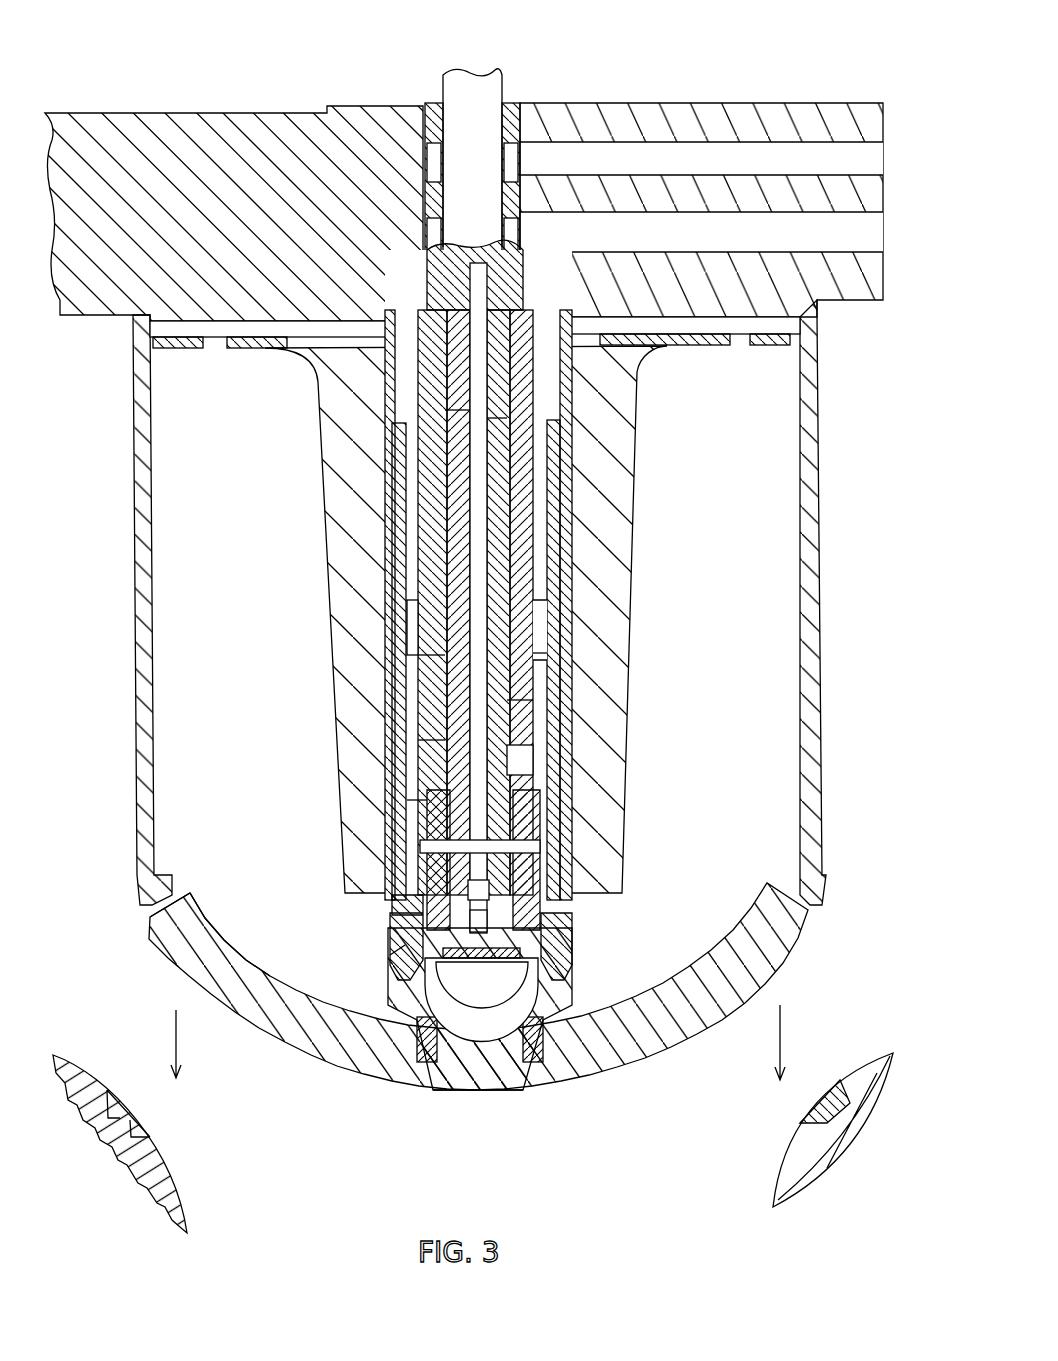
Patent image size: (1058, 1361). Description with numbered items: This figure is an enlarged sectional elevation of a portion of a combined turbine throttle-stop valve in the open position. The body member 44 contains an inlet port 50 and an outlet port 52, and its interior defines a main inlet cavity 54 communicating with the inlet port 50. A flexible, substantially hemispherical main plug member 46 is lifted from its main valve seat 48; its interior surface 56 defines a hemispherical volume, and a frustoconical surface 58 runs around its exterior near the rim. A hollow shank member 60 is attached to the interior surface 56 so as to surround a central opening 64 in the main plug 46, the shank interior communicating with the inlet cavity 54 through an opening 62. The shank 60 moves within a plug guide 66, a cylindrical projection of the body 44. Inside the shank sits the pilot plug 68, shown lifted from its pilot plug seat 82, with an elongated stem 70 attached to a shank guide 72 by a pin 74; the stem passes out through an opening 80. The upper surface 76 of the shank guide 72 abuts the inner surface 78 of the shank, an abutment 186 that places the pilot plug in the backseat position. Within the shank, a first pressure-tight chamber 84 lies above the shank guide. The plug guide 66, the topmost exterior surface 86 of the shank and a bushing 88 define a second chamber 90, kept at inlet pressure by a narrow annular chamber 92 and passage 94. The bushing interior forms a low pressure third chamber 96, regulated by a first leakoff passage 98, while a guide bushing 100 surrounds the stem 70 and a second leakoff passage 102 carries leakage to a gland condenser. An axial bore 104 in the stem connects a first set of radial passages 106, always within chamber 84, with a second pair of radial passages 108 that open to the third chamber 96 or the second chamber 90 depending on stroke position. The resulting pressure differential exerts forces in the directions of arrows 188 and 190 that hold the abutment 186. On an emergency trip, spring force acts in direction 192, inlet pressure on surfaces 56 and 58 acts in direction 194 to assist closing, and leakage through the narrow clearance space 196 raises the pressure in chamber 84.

The body member 44 is at (875, 1063).
The flexible main plug member 46 is at (304, 1047).
The main valve seat 48 is at (825, 1100).
The inlet port 50 is at (100, 561).
The outlet port 52 is at (512, 1208).
The main inlet cavity 54 is at (200, 539).
The interior surface 56 is at (220, 946).
The frustoconical surface 58 is at (173, 902).
The hollow shank member 60 is at (411, 884).
The opening 62 is at (397, 951).
The opening 64 is at (437, 1090).
The plug guide 66 is at (632, 466).
The pilot plug 68 is at (494, 1005).
The elongated stem 70 is at (490, 99).
The shank guide 72 is at (523, 906).
The pin 74 is at (527, 846).
The upper surface 76 is at (518, 781).
The inner surface 78 is at (433, 790).
The opening 80 is at (515, 703).
The pilot plug seat 82 is at (543, 1060).
The first pressure-tight chamber 84 is at (524, 758).
The topmost exterior surface 86 is at (540, 653).
The bushing 88 is at (518, 497).
The second chamber 90 is at (540, 606).
The annular chamber 92 is at (266, 340).
The passage 94 is at (211, 350).
The third chamber 96 is at (503, 406).
The first leakoff passage 98 is at (865, 238).
The guide bushing 100 is at (520, 186).
The second leakoff passage 102 is at (862, 158).
The axial bore 104 is at (470, 498).
The first set of radial passages 106 is at (493, 767).
The second pair of radial passages 108 is at (493, 432).
The abutment 186 is at (420, 807).
The arrow 188 is at (433, 628).
The arrow 190 is at (490, 1088).
The direction 192 is at (468, 0).
The direction of force 194 is at (667, 932).
The narrow clearance space 196 is at (453, 670).